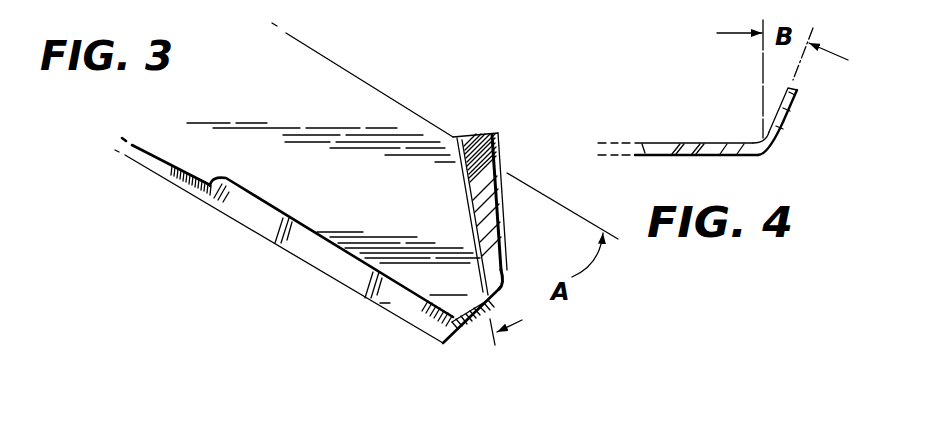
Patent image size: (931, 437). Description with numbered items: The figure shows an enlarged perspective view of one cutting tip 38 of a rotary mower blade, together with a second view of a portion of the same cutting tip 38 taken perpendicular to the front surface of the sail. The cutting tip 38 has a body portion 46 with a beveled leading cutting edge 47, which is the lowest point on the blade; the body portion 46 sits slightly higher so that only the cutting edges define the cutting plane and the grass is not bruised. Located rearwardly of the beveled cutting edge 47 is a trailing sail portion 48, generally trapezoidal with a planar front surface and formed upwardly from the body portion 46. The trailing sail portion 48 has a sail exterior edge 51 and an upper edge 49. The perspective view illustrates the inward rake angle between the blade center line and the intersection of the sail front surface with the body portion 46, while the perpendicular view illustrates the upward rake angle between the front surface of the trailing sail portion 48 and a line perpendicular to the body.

In FIG. 3, the cutting tip 38 is at (367, 45).
In FIG. 4, the cutting tip 38 is at (705, 115).
In FIG. 3, the body portion 46 is at (368, 120).
In FIG. 3, the beveled cutting edge 47 is at (322, 258).
In FIG. 4, the beveled cutting edge 47 is at (702, 155).
In FIG. 3, the trailing sail portion 48 is at (497, 137).
In FIG. 4, the trailing sail portion 48 is at (795, 105).
In FIG. 3, the upper edge 49 is at (503, 205).
In FIG. 3, the sail exterior edge 51 is at (497, 295).
In FIG. 4, the sail exterior edge 51 is at (765, 153).